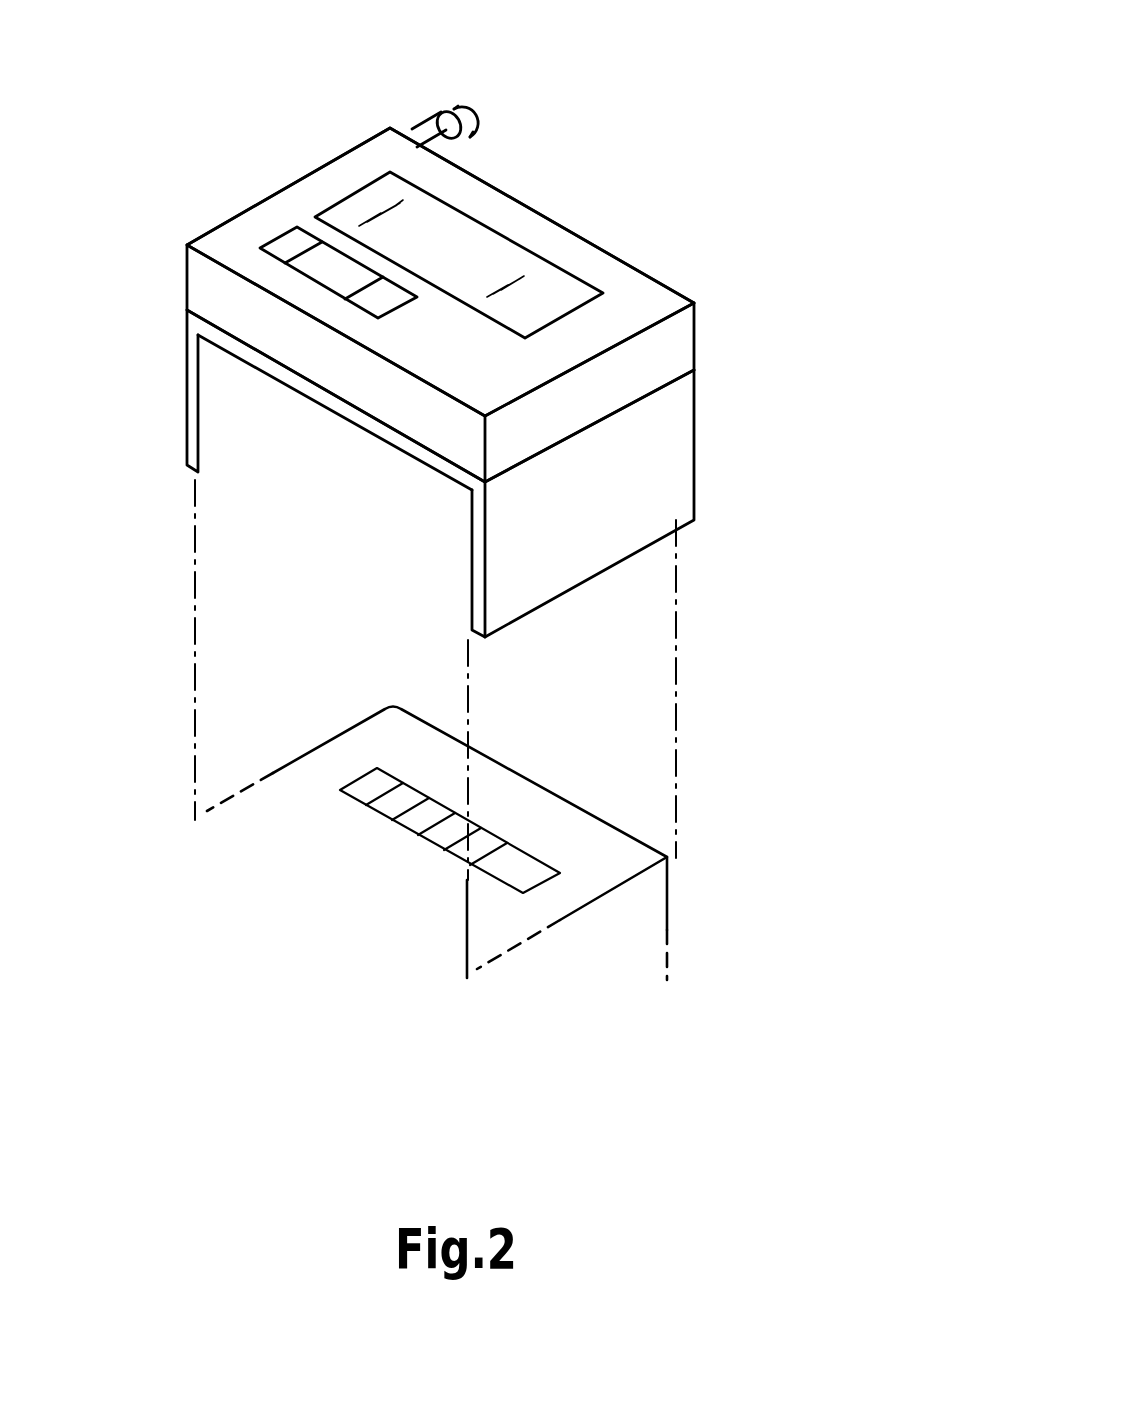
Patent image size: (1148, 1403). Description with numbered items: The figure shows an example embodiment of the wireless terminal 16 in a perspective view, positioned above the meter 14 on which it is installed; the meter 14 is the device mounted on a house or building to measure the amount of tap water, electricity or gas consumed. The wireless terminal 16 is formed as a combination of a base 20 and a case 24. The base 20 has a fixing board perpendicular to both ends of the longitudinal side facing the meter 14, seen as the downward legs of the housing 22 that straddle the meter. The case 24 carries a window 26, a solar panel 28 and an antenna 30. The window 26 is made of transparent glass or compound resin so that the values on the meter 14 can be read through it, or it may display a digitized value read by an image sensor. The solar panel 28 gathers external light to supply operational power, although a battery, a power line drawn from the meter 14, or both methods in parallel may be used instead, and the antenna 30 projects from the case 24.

The meter 14 is at (655, 923).
The wireless terminal 16 is at (700, 106).
The base 20 is at (358, 424).
The housing 22 is at (680, 450).
The case 24 is at (680, 347).
The window 26 is at (377, 198).
The solar panel 28 is at (290, 247).
The antenna 30 is at (452, 107).